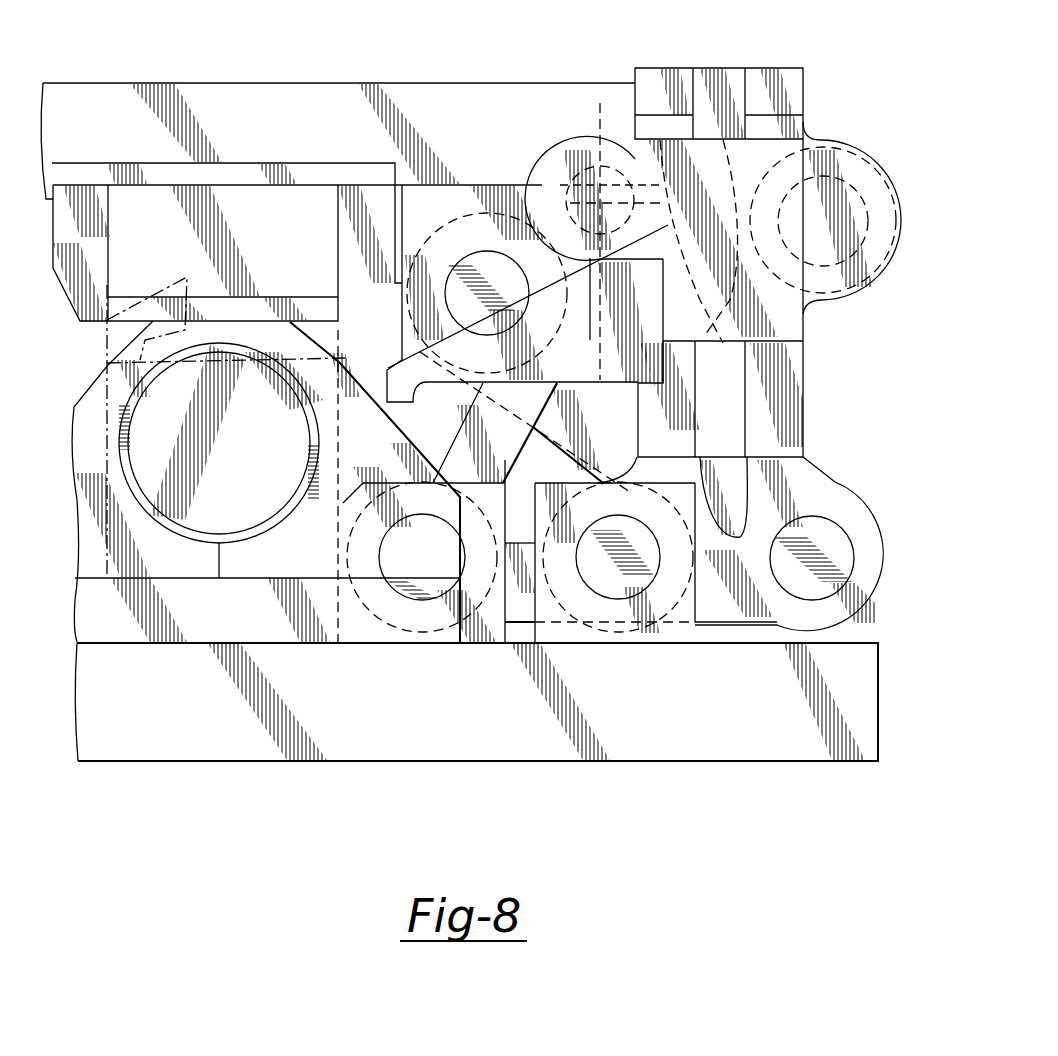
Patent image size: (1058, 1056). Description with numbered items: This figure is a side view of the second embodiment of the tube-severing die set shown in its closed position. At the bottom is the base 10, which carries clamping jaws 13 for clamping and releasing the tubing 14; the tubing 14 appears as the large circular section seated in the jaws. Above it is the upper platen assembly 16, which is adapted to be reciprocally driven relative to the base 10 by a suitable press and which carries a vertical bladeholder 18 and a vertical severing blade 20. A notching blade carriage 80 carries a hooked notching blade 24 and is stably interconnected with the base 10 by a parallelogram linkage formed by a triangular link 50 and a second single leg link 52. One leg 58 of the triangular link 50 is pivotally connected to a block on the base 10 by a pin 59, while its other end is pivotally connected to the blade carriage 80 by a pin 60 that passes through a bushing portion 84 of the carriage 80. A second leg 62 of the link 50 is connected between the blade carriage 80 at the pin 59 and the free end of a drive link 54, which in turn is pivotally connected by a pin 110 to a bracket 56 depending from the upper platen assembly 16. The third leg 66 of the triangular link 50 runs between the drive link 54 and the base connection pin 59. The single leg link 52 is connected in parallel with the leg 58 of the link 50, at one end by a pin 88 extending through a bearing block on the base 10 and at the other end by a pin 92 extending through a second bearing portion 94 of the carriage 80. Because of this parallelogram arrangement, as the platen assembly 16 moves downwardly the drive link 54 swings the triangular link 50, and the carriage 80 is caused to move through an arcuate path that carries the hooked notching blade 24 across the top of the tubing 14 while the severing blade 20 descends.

The base 10 is at (878, 652).
The clamping jaws 13 is at (95, 380).
The tubing 14 is at (150, 503).
The upper platen assembly 16 is at (533, 93).
The bladeholder 18 is at (373, 213).
The severing blade 20 is at (340, 462).
The hooked notching blade 24 is at (402, 362).
The triangular link 50 is at (781, 413).
The second single leg link 52 is at (748, 203).
The drive link 54 is at (823, 467).
The bracket 56 is at (397, 288).
The leg of triangular link 58 is at (467, 410).
The pin 59 is at (397, 600).
The pin 60 is at (603, 115).
The second leg of triangular link 62 is at (680, 396).
The third leg of triangular link 66 is at (733, 625).
The notching blade carriage 80 is at (806, 353).
The bushing portion 84 is at (563, 153).
The pin 88 is at (832, 530).
The pin 92 is at (842, 178).
The second bearing portion 94 is at (842, 140).
The pin 110 is at (478, 222).